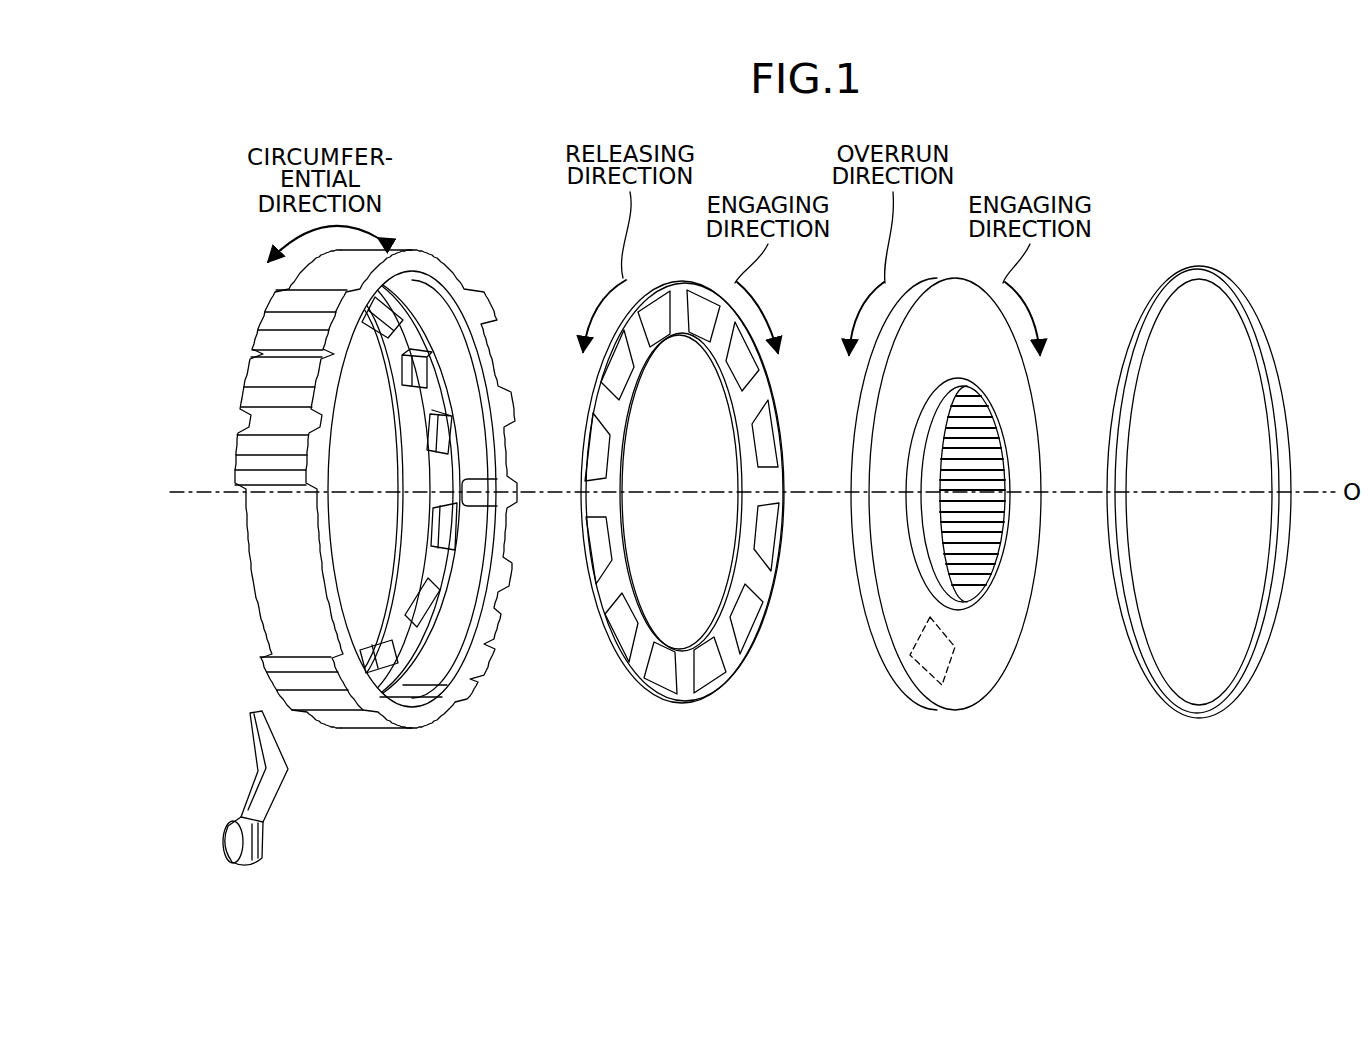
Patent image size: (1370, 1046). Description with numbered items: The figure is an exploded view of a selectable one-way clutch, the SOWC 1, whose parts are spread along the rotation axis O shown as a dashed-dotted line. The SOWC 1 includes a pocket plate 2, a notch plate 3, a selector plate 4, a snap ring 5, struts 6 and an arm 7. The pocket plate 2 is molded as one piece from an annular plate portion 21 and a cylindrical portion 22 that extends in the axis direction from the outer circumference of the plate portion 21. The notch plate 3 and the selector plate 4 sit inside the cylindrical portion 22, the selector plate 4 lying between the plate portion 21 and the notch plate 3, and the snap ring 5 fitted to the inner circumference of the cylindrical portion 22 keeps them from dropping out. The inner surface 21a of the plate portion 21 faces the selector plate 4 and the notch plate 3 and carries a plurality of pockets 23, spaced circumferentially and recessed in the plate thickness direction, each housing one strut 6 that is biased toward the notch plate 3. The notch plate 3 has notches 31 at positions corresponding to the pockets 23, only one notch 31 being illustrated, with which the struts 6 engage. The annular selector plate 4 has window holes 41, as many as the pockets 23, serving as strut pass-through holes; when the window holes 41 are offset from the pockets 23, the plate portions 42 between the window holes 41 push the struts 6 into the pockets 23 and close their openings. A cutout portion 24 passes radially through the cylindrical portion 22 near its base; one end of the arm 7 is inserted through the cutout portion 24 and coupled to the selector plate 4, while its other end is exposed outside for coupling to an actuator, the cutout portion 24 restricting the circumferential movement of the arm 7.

The selectable one-way clutch (SOWC) 1 is at (240, 222).
The pocket plate 2 is at (372, 745).
The plate portion 21 is at (410, 638).
The inner surface 21a is at (455, 470).
The cylindrical portion 22 is at (445, 285).
The pocket 23 is at (433, 577).
The cutout portion 24 is at (288, 667).
The strut 6 is at (422, 377).
The arm 7 is at (278, 835).
The selector plate 4 is at (677, 707).
The window hole 41 is at (751, 423).
The plate portion 42 is at (755, 573).
The notch plate 3 is at (940, 708).
The notch 31 is at (920, 692).
The snap ring 5 is at (1197, 722).